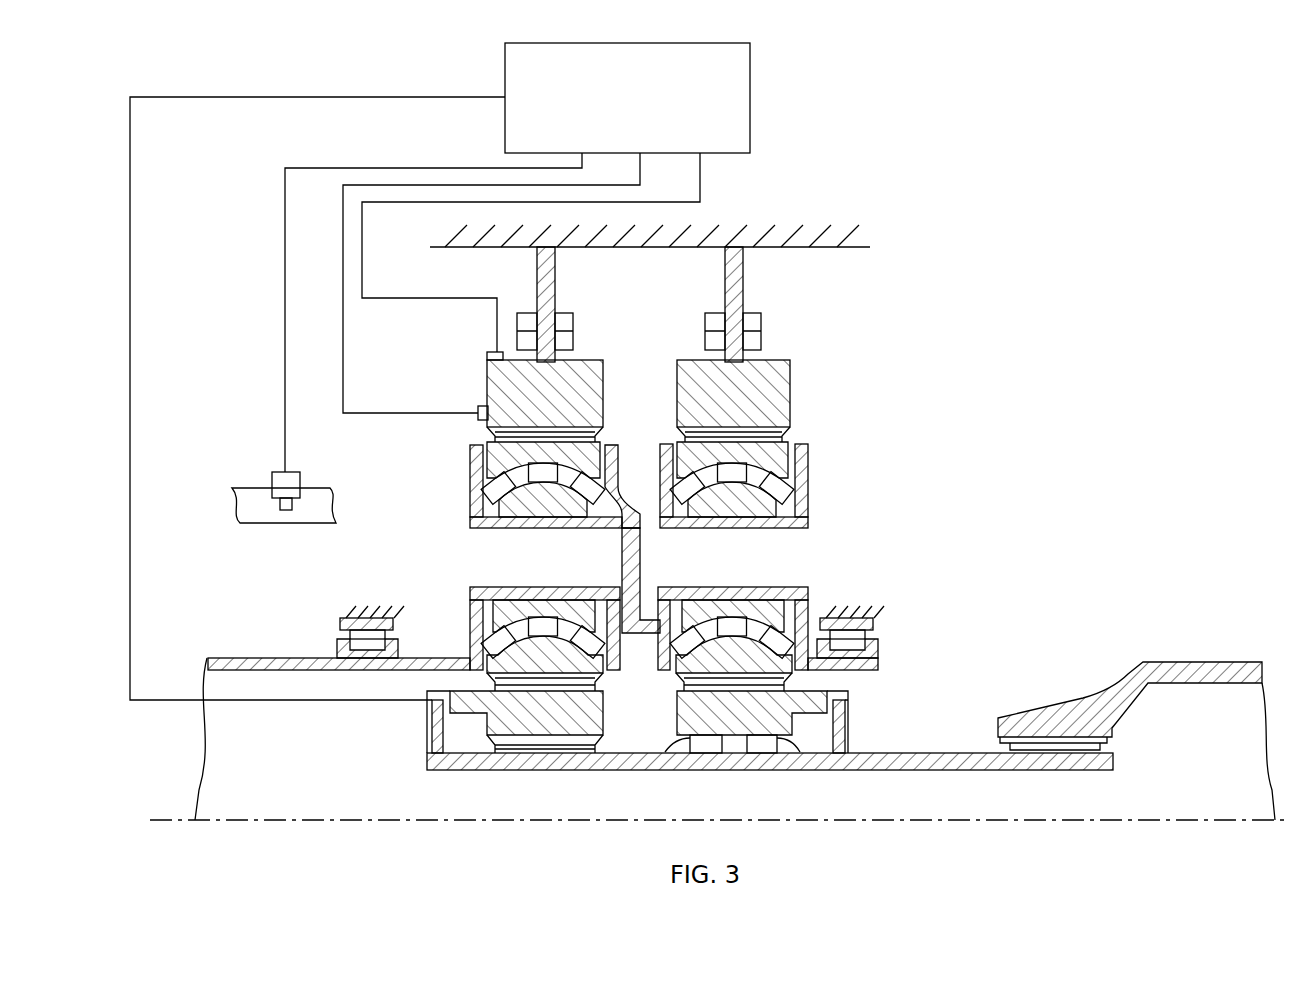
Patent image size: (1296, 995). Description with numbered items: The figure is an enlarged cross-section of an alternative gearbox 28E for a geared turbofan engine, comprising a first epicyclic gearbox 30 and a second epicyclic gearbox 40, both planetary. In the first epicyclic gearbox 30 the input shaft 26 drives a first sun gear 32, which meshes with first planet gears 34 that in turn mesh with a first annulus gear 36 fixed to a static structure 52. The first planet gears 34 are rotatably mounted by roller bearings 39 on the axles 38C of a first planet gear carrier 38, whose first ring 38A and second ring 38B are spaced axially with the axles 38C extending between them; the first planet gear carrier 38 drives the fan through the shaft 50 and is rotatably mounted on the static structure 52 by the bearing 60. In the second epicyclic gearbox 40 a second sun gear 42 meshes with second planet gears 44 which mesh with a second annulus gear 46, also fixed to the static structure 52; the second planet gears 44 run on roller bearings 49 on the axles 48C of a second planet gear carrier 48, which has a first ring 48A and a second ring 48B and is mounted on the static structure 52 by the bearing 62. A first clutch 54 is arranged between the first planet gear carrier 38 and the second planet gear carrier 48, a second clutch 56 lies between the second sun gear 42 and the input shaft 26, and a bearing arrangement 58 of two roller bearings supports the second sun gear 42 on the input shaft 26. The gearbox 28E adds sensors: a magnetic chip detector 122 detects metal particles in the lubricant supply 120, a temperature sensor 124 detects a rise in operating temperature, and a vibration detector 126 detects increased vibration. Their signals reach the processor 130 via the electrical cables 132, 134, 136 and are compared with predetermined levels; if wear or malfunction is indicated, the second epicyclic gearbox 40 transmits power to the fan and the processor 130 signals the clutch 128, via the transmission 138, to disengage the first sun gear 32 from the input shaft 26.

The input shaft 26 is at (1220, 668).
The gearbox 28E is at (928, 372).
The first epicyclic gearbox 30 is at (470, 373).
The first sun gear 32 is at (516, 718).
The first planet gears 34 is at (486, 462).
The first annulus gear 36 is at (573, 394).
The first planet gear carrier 38 is at (464, 518).
The first ring 38A is at (478, 490).
The second ring 38B is at (612, 447).
The axles 38C is at (505, 528).
The planet gear bearings 39 is at (552, 492).
The second epicyclic gearbox 40 is at (805, 345).
The second sun gear 42 is at (752, 712).
The second planet gears 44 is at (779, 440).
The second annulus gear 46 is at (720, 392).
The second planet gear carrier 48 is at (806, 468).
The first ring 48A is at (660, 472).
The second ring 48B is at (804, 488).
The axles 48C is at (790, 529).
The planet gear bearings 49 is at (755, 492).
The shaft 50 is at (292, 658).
The static structure 52 is at (823, 227).
The first clutch 54 is at (648, 565).
The second clutch 56 is at (859, 683).
The bearing arrangement 58 is at (756, 746).
The bearing 60 is at (406, 641).
The bearing 62 is at (879, 640).
The lubricant supply 120 is at (249, 500).
The magnetic chip detector 122 is at (272, 486).
The temperature sensor 124 is at (478, 413).
The vibration detector 126 is at (490, 352).
The clutch 128 is at (424, 738).
The processor 130 is at (733, 98).
The electrical cable 132 is at (285, 345).
The electrical cable 134 is at (343, 320).
The electrical cable 136 is at (362, 258).
The transmission 138 is at (443, 97).